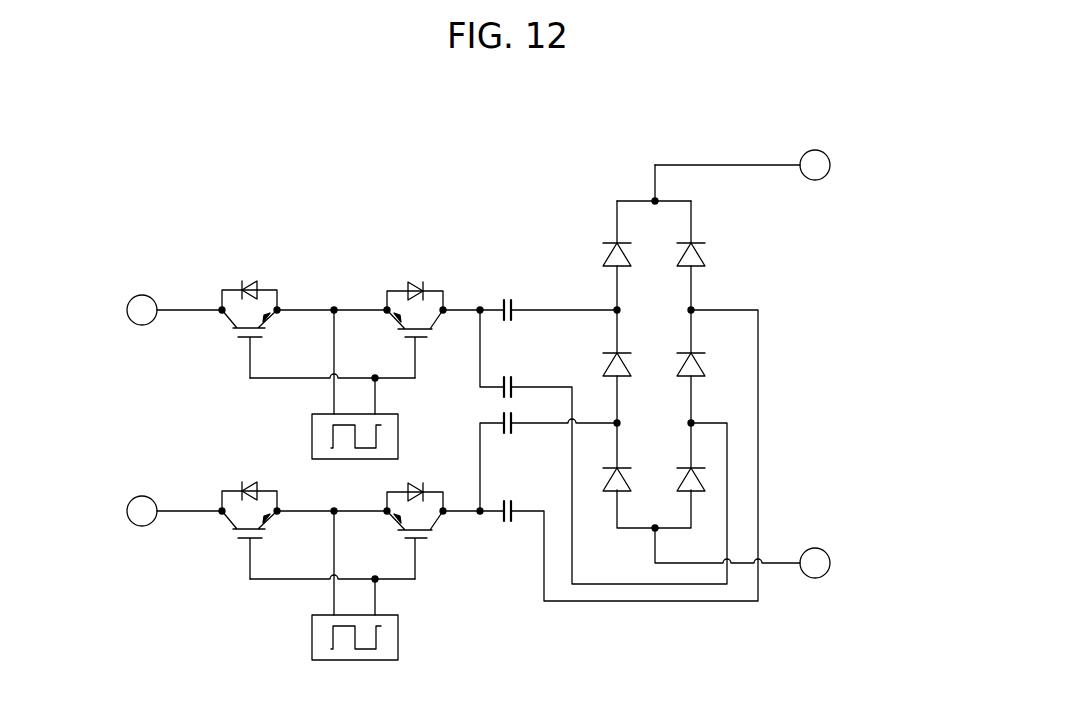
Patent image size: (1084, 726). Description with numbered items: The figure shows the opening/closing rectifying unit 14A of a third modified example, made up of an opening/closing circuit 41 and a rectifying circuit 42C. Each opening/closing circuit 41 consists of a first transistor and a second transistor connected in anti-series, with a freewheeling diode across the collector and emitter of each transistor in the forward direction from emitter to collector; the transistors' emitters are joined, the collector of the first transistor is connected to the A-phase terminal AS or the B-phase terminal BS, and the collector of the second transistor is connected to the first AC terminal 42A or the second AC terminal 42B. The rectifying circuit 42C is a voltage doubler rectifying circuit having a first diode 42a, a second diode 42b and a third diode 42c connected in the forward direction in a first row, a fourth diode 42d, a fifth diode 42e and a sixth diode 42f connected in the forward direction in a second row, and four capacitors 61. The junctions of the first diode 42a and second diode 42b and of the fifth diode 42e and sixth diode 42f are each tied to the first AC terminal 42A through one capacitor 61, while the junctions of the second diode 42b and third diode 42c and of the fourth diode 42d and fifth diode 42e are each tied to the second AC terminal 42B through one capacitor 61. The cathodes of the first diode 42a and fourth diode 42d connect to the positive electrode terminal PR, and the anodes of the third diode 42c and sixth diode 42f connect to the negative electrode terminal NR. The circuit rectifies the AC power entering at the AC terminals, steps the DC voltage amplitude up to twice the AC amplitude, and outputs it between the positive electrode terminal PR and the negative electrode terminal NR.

The opening/closing rectifying unit 14A is at (827, 122).
The opening/closing circuit 41 is at (222, 281).
The first AC terminal 42A is at (479, 305).
The second AC terminal 42B is at (479, 508).
The rectifying circuit 42C is at (497, 228).
The first diode 42a is at (604, 243).
The second diode 42b is at (608, 353).
The third diode 42c is at (604, 467).
The fourth diode 42d is at (703, 243).
The fifth diode 42e is at (703, 353).
The sixth diode 42f is at (703, 468).
The capacitor 61 is at (513, 384).
The A-phase terminal AS is at (127, 310).
The B-phase terminal BS is at (127, 511).
The positive electrode terminal PR is at (830, 165).
The negative electrode terminal NR is at (830, 563).